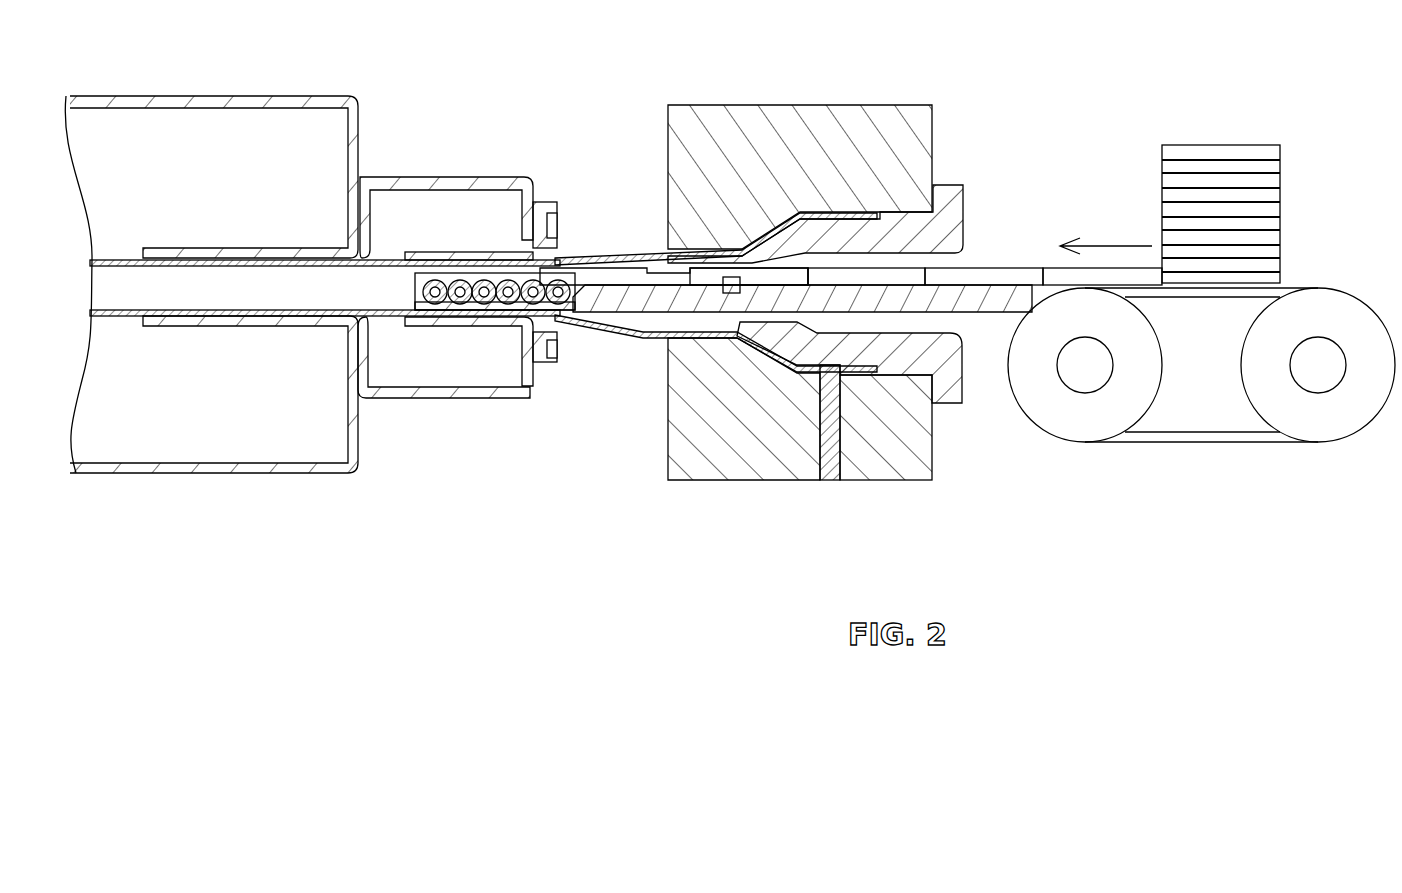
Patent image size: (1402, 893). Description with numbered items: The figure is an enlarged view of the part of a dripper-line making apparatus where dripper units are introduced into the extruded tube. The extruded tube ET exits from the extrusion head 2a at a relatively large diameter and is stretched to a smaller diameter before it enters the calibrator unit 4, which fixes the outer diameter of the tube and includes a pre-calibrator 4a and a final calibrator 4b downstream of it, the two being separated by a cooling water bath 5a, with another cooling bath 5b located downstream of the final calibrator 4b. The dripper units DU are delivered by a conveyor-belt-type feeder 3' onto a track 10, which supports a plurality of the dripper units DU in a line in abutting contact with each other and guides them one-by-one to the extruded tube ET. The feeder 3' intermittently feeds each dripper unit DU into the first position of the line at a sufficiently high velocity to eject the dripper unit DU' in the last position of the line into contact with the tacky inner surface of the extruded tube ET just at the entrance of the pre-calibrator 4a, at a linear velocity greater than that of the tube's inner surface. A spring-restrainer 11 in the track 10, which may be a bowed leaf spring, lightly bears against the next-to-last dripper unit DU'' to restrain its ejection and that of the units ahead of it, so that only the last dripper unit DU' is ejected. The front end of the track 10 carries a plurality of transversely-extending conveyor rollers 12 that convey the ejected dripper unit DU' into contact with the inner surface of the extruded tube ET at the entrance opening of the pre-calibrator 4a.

The extrusion head 2a is at (862, 110).
The feeder 3' is at (1201, 397).
The calibrator unit 4 is at (476, 130).
The pre-calibrator 4a is at (540, 204).
The final calibrator 4b is at (387, 205).
The cooling water bath 5a is at (400, 360).
The cooling bath 5b is at (188, 474).
The track 10 is at (985, 305).
The spring-restrainer 11 is at (718, 283).
The conveyor rollers 12 is at (438, 287).
The extruded tube ET is at (383, 253).
The dripper unit DU is at (914, 188).
The last dripper unit in the line DU' is at (716, 276).
The next-to-last dripper unit DU'' is at (856, 202).